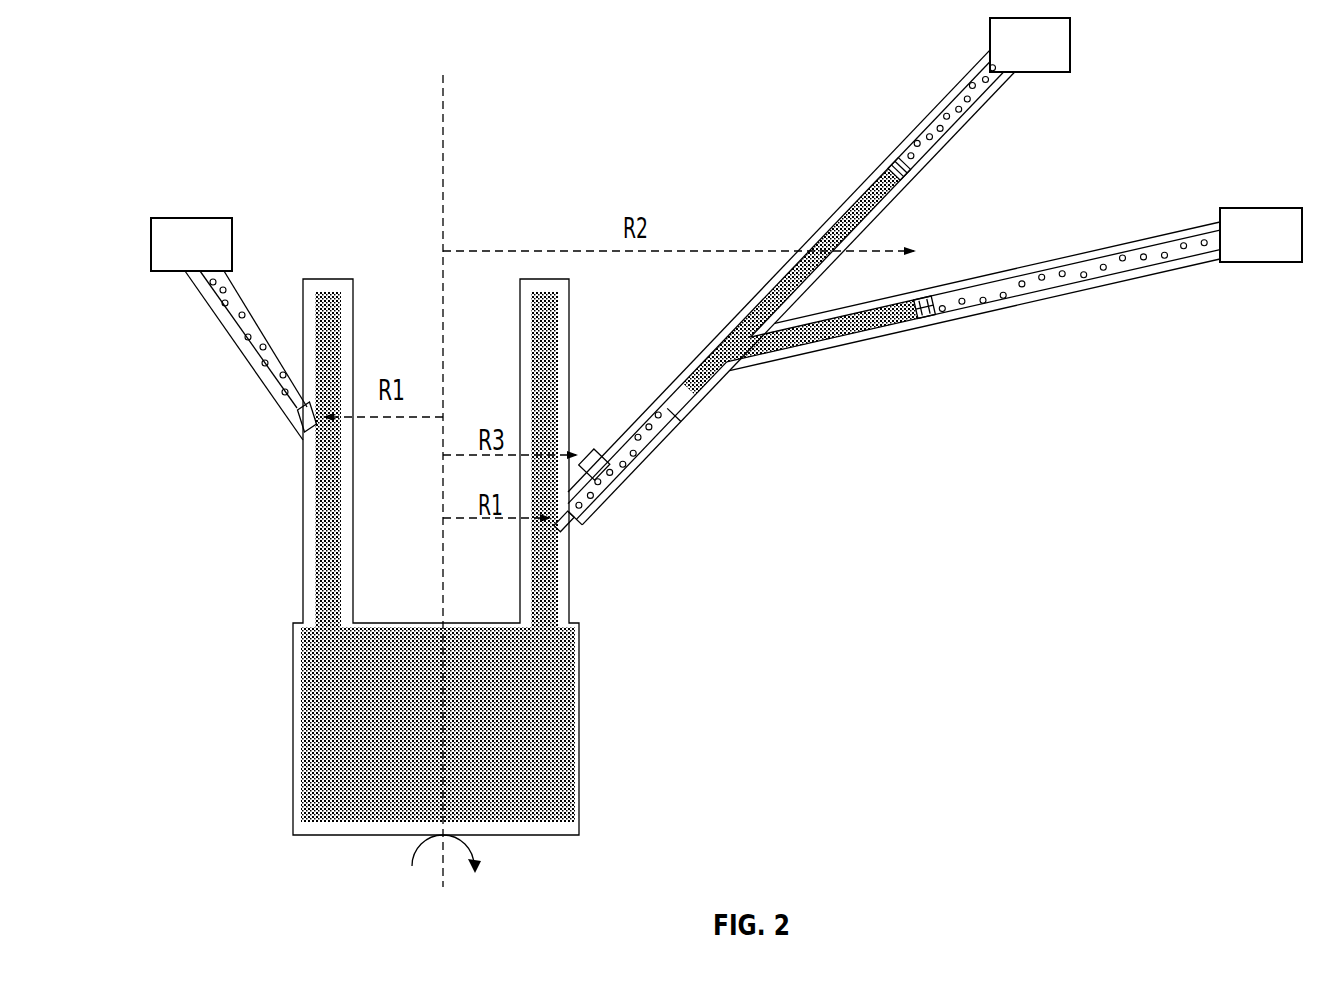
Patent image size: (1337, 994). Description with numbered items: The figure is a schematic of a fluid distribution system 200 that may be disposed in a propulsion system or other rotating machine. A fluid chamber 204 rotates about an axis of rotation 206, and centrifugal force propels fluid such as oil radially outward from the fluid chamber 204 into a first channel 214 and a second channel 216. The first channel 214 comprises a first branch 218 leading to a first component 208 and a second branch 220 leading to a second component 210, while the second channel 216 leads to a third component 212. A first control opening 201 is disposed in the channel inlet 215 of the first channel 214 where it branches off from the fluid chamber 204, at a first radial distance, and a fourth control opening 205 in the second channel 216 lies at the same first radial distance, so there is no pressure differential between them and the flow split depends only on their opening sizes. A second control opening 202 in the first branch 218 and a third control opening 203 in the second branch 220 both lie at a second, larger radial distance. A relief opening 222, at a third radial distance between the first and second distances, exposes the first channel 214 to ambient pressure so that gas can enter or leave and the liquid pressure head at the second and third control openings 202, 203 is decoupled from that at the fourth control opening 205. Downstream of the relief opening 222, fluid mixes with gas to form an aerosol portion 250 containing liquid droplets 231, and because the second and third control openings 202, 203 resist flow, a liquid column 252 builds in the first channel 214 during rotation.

The fluid distribution system 200 is at (161, 50).
The first control opening 201 is at (576, 530).
The second control opening 202 is at (932, 316).
The third control opening 203 is at (916, 178).
The fluid chamber 204 is at (567, 780).
The fourth control opening 205 is at (296, 423).
The axis of rotation 206 is at (440, 868).
The first component 208 is at (1265, 208).
The second component 210 is at (1070, 38).
The third component 212 is at (180, 218).
The first channel 214 is at (683, 372).
The channel inlet 215 is at (557, 535).
The second channel 216 is at (230, 337).
The first branch 218 is at (860, 342).
The second branch 220 is at (846, 200).
The relief opening 222 is at (594, 447).
The liquid droplets 231 is at (651, 446).
The aerosol portion 250 is at (678, 424).
The liquid column 252 is at (745, 352).